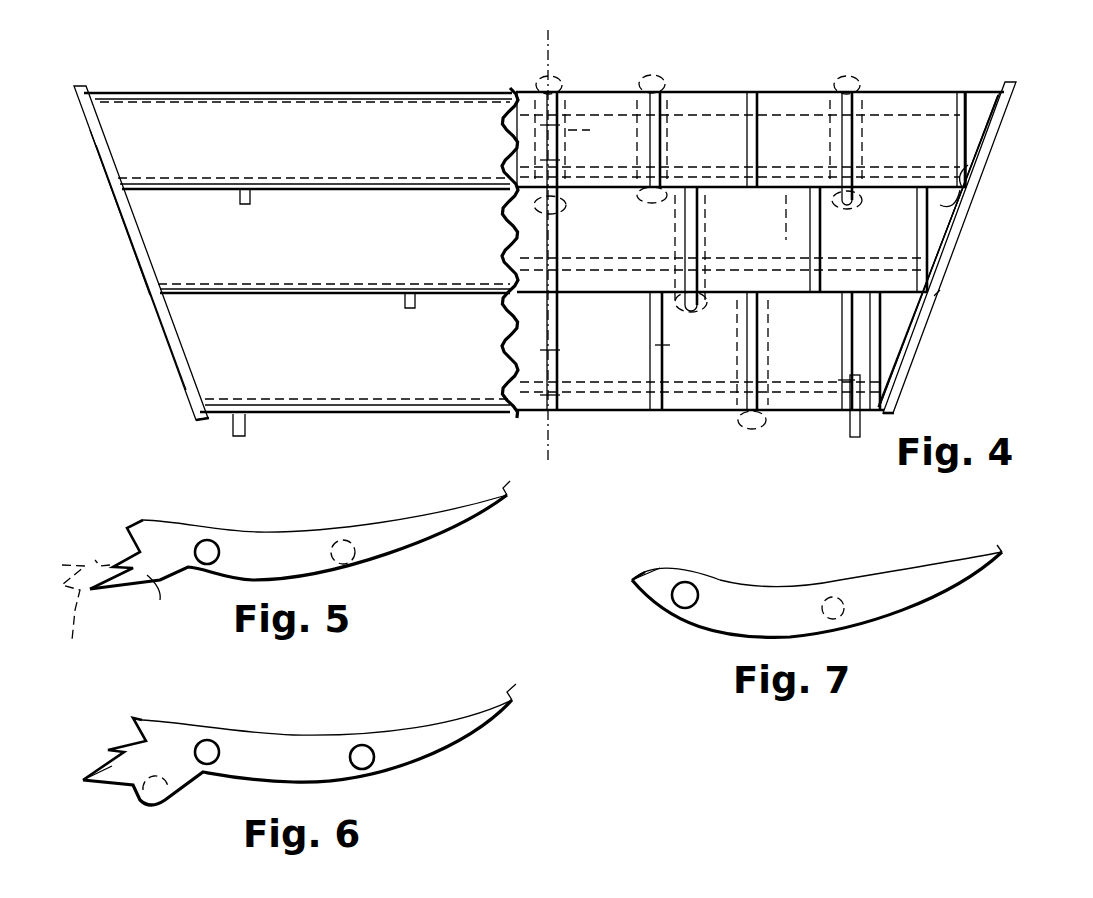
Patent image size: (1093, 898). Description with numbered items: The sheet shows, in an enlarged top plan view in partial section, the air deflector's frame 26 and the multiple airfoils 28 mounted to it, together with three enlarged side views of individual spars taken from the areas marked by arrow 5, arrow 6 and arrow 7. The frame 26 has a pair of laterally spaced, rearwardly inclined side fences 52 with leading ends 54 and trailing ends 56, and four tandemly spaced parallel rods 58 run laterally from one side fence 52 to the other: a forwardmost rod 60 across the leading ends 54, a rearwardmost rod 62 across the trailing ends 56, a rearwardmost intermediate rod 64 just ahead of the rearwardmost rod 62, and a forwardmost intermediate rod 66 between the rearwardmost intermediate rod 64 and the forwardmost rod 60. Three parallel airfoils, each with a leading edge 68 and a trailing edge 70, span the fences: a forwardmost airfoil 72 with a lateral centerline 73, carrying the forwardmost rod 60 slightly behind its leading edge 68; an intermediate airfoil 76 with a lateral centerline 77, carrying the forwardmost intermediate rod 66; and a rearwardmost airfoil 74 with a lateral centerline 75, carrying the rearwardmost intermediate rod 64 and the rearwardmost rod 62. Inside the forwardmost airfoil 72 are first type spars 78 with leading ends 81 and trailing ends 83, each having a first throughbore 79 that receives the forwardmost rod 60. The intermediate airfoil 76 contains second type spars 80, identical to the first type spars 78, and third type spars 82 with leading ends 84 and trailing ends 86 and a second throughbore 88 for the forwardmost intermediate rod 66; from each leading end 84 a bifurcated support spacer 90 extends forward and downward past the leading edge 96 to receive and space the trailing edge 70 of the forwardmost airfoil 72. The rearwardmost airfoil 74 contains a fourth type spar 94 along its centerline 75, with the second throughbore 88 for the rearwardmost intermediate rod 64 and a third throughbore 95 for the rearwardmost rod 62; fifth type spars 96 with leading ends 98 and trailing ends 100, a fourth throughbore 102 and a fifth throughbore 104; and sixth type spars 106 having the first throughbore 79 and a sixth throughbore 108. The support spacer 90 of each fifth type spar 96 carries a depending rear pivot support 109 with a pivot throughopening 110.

In FIG. 4, the arrow 5 is at (538, 84).
In FIG. 4, the arrow 6 is at (858, 78).
In FIG. 4, the arrow 7 is at (658, 82).
In FIG. 4, the frame 26 is at (965, 258).
In FIG. 4, the multiple airfoils 28 is at (94, 152).
In FIG. 4, the side fences 52 is at (155, 352).
In FIG. 4, the leading ends 54 is at (192, 420).
In FIG. 4, the trailing ends 56 is at (78, 90).
In FIG. 4, the rods 58 is at (572, 135).
In FIG. 4, the forwardmost rod 60 is at (585, 414).
In FIG. 4, the rearwardmost rod 62 is at (776, 100).
In FIG. 4, the rearwardmost intermediate rod 64 is at (732, 163).
In FIG. 4, the forwardmost intermediate rod 66 is at (786, 245).
In FIG. 4, the leading edge 68 is at (942, 200).
In FIG. 5, the leading edge 68 is at (108, 564).
In FIG. 4, the trailing edge 70 is at (980, 92).
In FIG. 4, the forwardmost airfoil 72 is at (378, 414).
In FIG. 5, the forwardmost airfoil 72 is at (61, 611).
In FIG. 4, the lateral centerline 73 is at (548, 360).
In FIG. 4, the rearwardmost airfoil 74 is at (332, 90).
In FIG. 4, the lateral centerline 75 is at (522, 152).
In FIG. 4, the intermediate airfoil 76 is at (366, 184).
In FIG. 4, the lateral centerline 77 is at (540, 250).
In FIG. 4, the first type spars 78 is at (546, 345).
In FIG. 7, the first type spars 78 is at (767, 597).
In FIG. 4, the first throughbore 79 is at (652, 382).
In FIG. 7, the first throughbore 79 is at (695, 582).
In FIG. 4, the second type spars 80 is at (917, 240).
In FIG. 7, the second type spars 80 is at (817, 581).
In FIG. 7, the leading ends 81 is at (636, 576).
In FIG. 4, the third type spars 82 is at (683, 240).
In FIG. 5, the third type spars 82 is at (255, 545).
In FIG. 7, the trailing ends 83 is at (997, 550).
In FIG. 5, the leading ends 84 is at (142, 520).
In FIG. 5, the trailing ends 86 is at (506, 493).
In FIG. 5, the second throughbore 88 is at (207, 540).
In FIG. 5, the support spacer 90 is at (163, 601).
In FIG. 6, the support spacer 90 is at (107, 768).
In FIG. 4, the fourth type spar 94 is at (532, 100).
In FIG. 5, the fourth type spar 94 is at (298, 532).
In FIG. 5, the third throughbore 95 is at (350, 540).
In FIG. 4, the fifth type spars 96 is at (846, 90).
In FIG. 6, the fifth type spars 96 is at (280, 748).
In FIG. 6, the leading ends 98 is at (137, 722).
In FIG. 6, the trailing ends 100 is at (512, 688).
In FIG. 6, the fourth throughbore 102 is at (207, 740).
In FIG. 6, the fifth throughbore 104 is at (362, 745).
In FIG. 4, the sixth type spars 106 is at (640, 105).
In FIG. 7, the sixth type spars 106 is at (772, 553).
In FIG. 7, the sixth throughbore 108 is at (838, 622).
In FIG. 6, the rear pivot support 109 is at (157, 807).
In FIG. 6, the pivot throughopening 110 is at (157, 780).